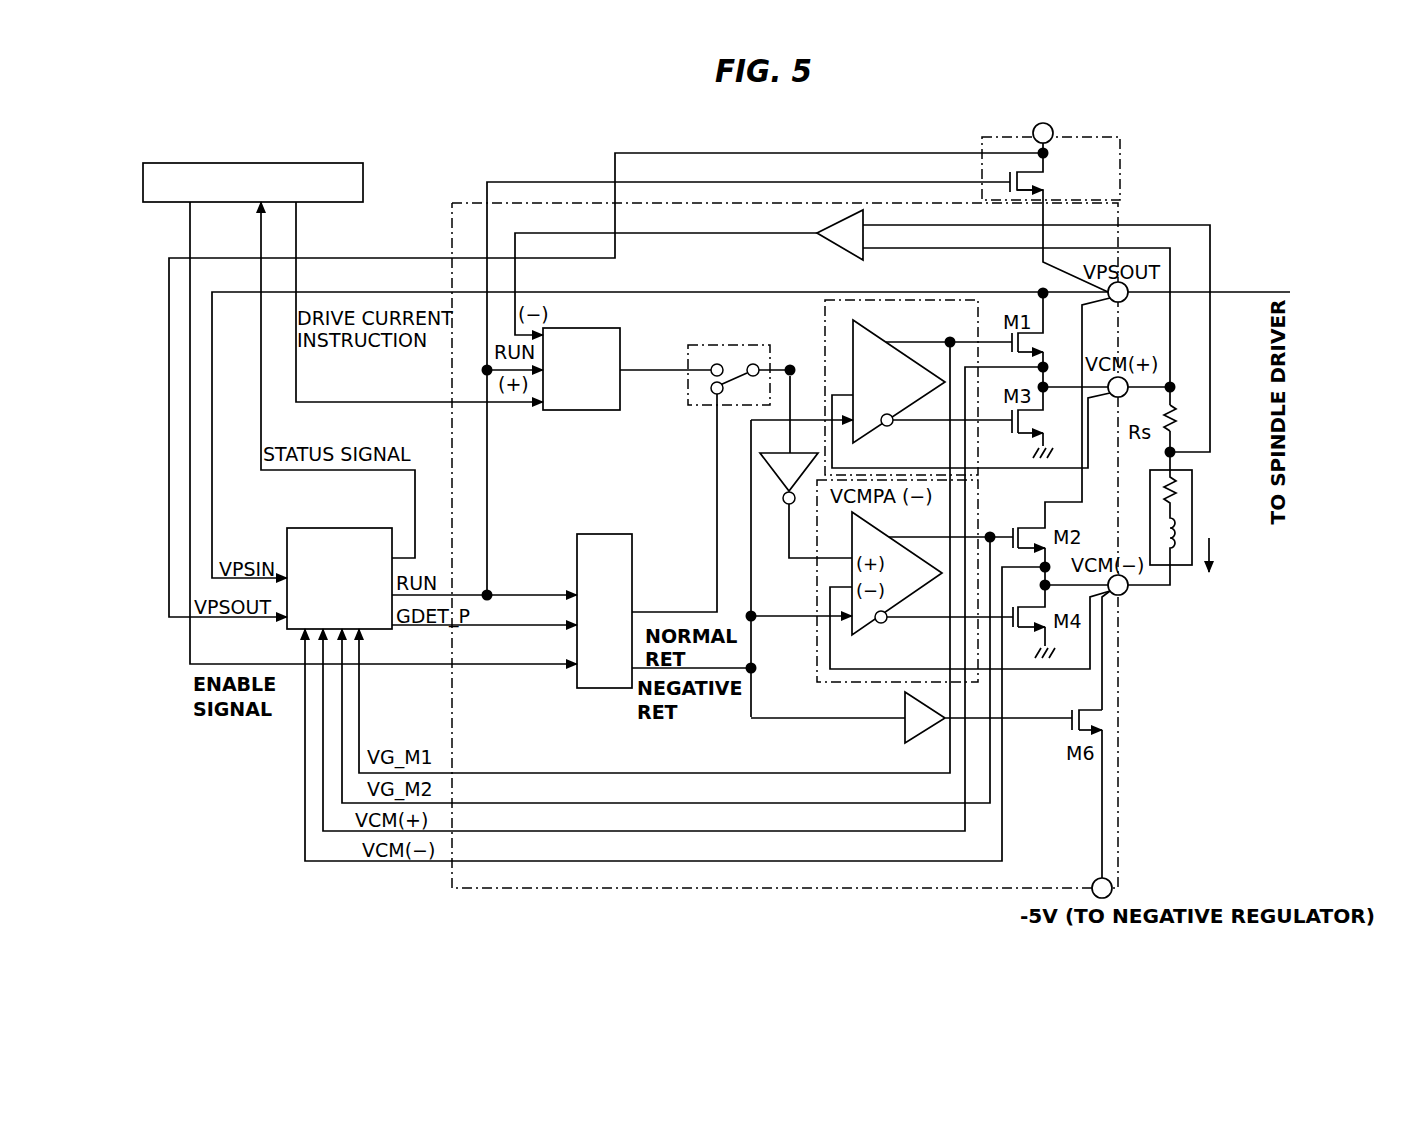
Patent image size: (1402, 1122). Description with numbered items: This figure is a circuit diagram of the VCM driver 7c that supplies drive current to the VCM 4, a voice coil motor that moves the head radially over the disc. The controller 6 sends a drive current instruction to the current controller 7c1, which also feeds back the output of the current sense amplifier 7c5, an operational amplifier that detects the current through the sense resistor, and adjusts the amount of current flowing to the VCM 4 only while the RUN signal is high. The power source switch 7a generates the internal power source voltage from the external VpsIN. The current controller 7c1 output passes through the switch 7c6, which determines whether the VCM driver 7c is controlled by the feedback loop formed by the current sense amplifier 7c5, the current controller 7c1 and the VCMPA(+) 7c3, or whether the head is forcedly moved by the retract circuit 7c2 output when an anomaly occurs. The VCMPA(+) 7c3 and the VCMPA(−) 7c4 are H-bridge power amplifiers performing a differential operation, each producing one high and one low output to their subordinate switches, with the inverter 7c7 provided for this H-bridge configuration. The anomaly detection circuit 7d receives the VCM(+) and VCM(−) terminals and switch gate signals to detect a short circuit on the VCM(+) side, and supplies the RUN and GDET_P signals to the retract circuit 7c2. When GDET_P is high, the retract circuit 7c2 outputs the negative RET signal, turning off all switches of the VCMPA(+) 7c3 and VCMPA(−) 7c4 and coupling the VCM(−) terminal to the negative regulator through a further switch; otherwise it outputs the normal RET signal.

The controller 6 is at (365, 181).
The power source switch 7a is at (1120, 169).
The VCM driver 7c is at (452, 692).
The current controller 7c1 is at (582, 411).
The retract circuit 7c2 is at (632, 581).
The VCMPA(+) 7c3 is at (825, 332).
The VCMPA(−) 7c4 is at (817, 655).
The current sense amplifier 7c5 is at (840, 222).
The switch 7c6 is at (725, 345).
The inverter 7c7 is at (778, 482).
The anomaly detection circuit 7d is at (316, 528).
The VCM 4 is at (1193, 508).